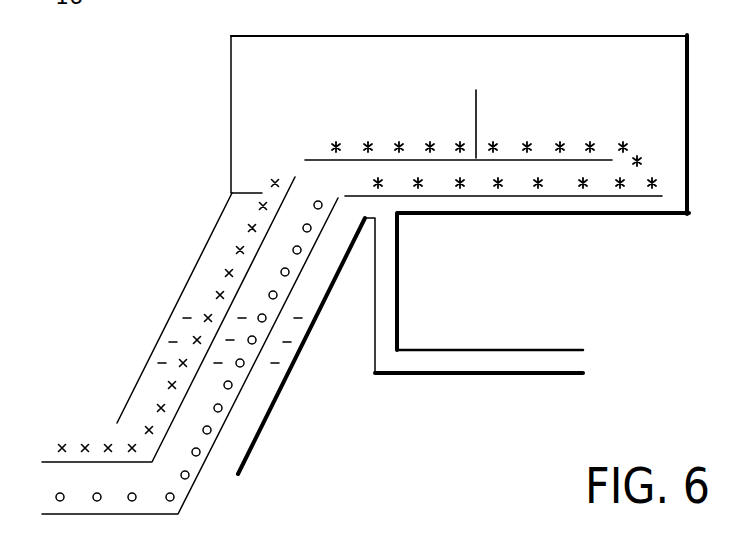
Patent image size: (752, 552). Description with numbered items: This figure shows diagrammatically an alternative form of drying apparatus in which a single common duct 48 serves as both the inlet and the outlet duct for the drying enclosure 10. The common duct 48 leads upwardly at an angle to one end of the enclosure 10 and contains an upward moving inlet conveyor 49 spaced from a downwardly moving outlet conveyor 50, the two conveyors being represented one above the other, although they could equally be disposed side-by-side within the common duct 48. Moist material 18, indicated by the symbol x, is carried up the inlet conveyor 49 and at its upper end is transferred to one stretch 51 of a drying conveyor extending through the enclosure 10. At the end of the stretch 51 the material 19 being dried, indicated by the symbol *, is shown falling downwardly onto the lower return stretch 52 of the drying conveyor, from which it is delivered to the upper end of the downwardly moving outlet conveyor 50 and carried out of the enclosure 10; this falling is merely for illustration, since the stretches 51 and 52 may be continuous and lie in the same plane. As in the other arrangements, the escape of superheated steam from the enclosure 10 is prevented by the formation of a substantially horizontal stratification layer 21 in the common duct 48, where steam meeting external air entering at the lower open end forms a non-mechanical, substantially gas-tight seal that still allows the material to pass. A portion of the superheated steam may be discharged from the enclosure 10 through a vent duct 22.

The enclosure 10 is at (395, 35).
The moist material 18 is at (146, 430).
The material being dried 19 is at (590, 142).
The stratification layer 21 is at (162, 363).
The vent duct 22 is at (400, 302).
The common duct 48 is at (275, 402).
The inlet conveyor 49 is at (234, 256).
The outlet conveyor 50 is at (310, 257).
The stretch of drying conveyor 51 is at (477, 112).
The return stretch of drying conveyor 52 is at (527, 197).